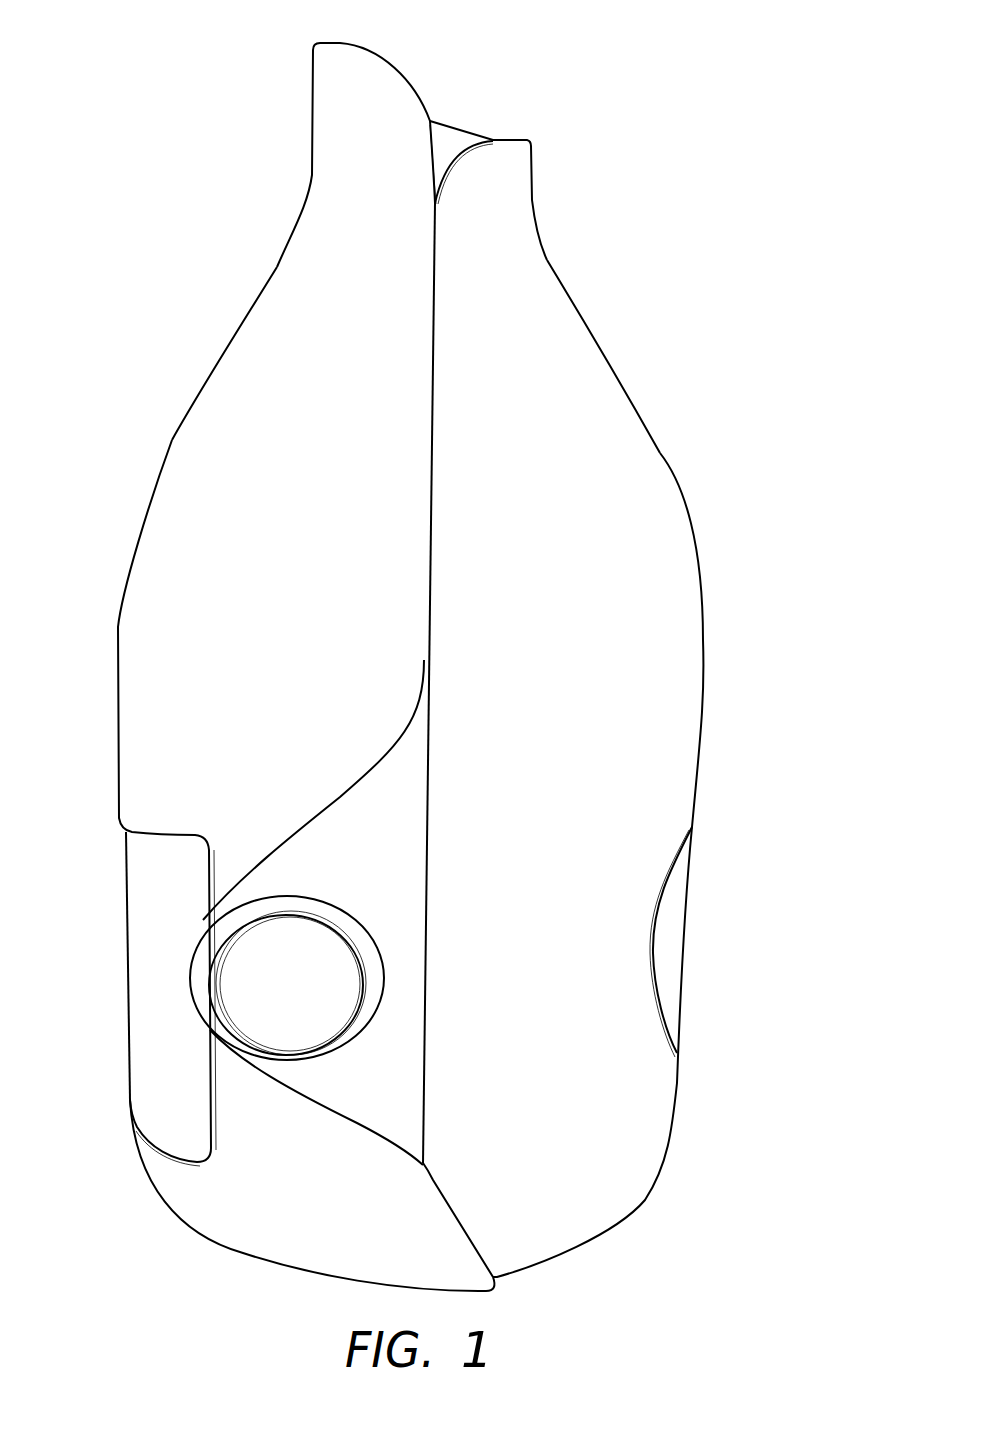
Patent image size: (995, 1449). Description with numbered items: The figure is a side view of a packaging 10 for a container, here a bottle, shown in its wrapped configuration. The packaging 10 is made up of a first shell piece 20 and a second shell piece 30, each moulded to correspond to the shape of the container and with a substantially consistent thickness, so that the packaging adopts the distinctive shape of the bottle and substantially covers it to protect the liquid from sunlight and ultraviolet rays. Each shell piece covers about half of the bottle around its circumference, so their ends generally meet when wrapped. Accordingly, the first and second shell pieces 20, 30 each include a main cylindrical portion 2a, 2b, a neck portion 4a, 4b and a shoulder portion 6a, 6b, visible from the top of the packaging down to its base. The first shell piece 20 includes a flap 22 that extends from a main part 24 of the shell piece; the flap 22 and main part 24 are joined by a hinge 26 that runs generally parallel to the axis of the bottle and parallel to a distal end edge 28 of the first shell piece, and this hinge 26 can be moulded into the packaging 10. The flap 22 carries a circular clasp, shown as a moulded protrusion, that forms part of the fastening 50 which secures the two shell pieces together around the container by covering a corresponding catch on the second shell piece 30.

The packaging 10 is at (544, 38).
The neck portion 4a is at (532, 163).
The neck portion 4b is at (313, 103).
The shoulder portion 6a is at (590, 328).
The shoulder portion 6b is at (245, 318).
The second shell piece 30 is at (202, 443).
The first shell piece 20 is at (630, 465).
The distal end edge 28 is at (430, 527).
The hinge 26 is at (424, 853).
The main part 24 is at (509, 782).
The flap 22 is at (362, 869).
The main cylindrical portion 2a is at (665, 760).
The main cylindrical portion 2b is at (162, 757).
The fastening 50 is at (305, 996).